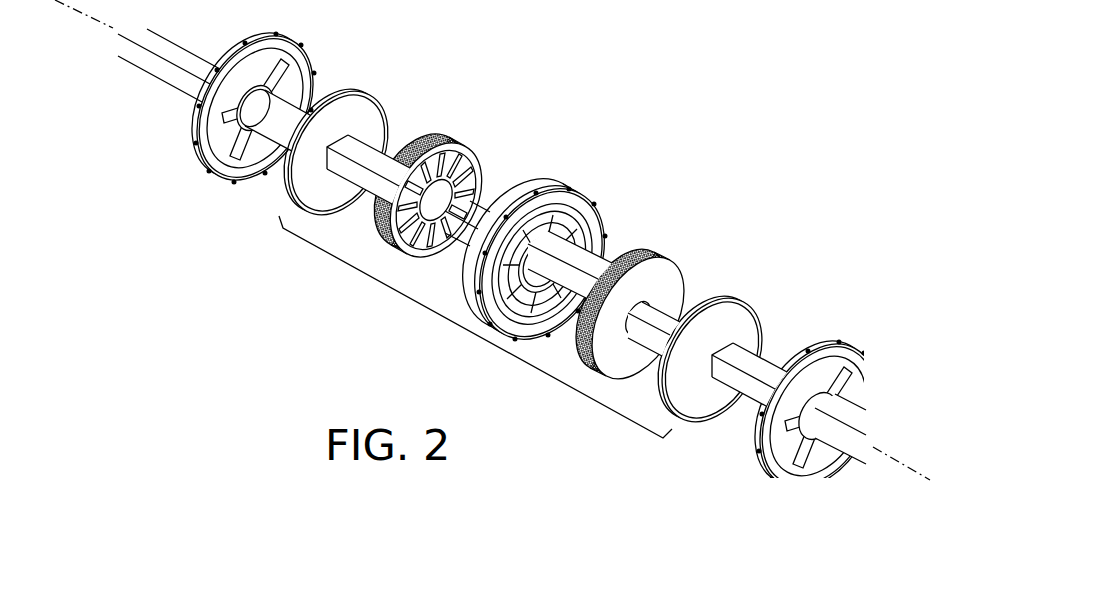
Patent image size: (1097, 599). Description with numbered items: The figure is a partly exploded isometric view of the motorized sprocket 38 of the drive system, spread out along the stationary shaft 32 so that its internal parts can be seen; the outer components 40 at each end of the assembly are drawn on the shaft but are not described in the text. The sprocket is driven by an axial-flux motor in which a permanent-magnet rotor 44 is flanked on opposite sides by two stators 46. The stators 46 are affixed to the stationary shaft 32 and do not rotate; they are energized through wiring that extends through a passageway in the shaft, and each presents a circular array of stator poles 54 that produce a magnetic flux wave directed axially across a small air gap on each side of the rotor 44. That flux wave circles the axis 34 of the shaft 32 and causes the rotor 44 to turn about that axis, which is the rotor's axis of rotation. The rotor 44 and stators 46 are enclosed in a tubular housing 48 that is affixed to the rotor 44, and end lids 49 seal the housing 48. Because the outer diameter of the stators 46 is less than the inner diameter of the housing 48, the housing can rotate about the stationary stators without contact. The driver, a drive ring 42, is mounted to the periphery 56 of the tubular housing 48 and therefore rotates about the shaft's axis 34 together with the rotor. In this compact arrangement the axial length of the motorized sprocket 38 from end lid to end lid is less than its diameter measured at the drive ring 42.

The stationary shaft 32 is at (670, 320).
The axis 34 is at (890, 457).
The motorized sprocket 38 is at (487, 341).
The end plate 40 is at (297, 48).
The drive ring 42 is at (540, 190).
The permanent-magnet rotor 44 is at (573, 237).
The stators 46 is at (450, 139).
The tubular housing 48 is at (520, 190).
The end lids 49 is at (372, 92).
The stator poles 54 is at (424, 140).
The periphery 56 is at (465, 272).